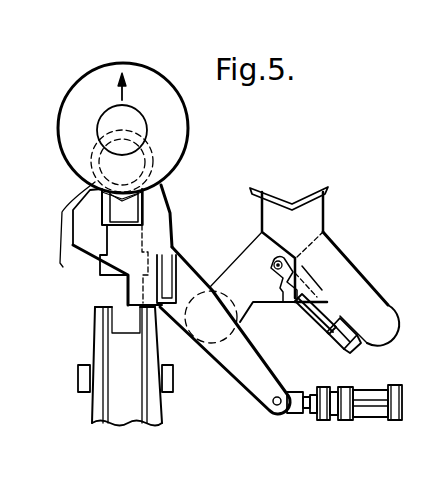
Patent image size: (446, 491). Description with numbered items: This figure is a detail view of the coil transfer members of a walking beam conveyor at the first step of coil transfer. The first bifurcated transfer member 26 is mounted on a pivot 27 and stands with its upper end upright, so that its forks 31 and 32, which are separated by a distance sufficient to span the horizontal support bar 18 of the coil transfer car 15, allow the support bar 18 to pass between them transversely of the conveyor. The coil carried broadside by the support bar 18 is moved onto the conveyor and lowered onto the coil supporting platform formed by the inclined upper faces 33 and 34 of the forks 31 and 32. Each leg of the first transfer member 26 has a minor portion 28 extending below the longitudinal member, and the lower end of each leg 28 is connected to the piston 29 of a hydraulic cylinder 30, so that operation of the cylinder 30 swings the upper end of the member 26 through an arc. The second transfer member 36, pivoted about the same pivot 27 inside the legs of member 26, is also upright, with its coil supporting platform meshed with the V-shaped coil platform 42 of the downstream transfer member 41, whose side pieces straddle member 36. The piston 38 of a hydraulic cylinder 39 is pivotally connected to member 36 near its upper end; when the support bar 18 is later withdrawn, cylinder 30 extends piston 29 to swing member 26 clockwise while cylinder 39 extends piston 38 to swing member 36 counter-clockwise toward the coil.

The coil transfer car 15 is at (95, 327).
The horizontal support bar 18 is at (122, 222).
The first bifurcated transfer member 26 is at (173, 240).
The pivot 27 is at (212, 318).
The minor portion of leg 28 is at (258, 383).
The piston 29 is at (307, 414).
The hydraulic cylinder 30 is at (372, 418).
The fork 31 is at (90, 243).
The fork 32 is at (169, 212).
The upper face of fork 33 is at (100, 184).
The upper face of fork 34 is at (158, 176).
The second transfer member 36 is at (257, 258).
The piston 38 is at (283, 307).
The hydraulic cylinder 39 is at (347, 337).
The transfer member 41 is at (345, 275).
The V-shaped coil platform 42 is at (294, 198).